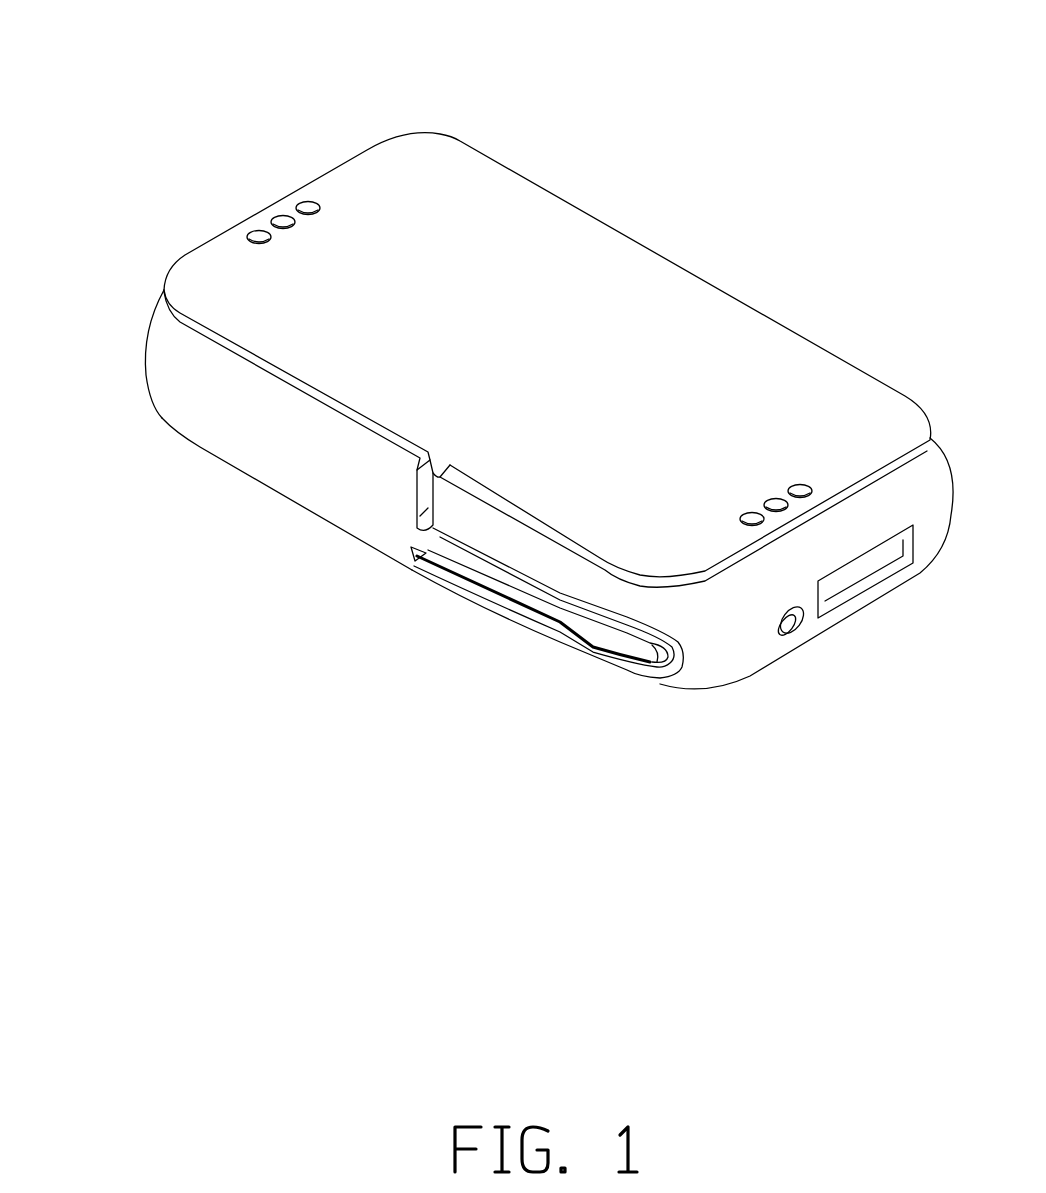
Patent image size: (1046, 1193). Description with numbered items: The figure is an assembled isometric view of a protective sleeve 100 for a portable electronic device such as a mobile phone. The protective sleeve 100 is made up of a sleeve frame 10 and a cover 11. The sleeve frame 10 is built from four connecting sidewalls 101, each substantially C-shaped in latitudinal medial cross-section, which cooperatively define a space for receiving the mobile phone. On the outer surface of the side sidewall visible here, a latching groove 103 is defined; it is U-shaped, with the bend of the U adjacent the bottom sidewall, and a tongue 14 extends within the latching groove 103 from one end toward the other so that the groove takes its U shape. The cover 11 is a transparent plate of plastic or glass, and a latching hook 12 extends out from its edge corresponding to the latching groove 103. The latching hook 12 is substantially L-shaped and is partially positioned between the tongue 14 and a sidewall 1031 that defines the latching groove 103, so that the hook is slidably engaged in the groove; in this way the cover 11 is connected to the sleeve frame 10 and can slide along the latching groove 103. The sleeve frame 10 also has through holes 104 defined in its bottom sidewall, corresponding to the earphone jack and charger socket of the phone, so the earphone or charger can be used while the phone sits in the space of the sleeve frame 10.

The protective sleeve 100 is at (298, 88).
The sleeve frame 10 is at (162, 358).
The cover 11 is at (762, 357).
The connecting sidewall 101 is at (318, 472).
The latching hook 12 is at (418, 528).
The tongue 14 is at (520, 600).
The latching groove 103 is at (673, 665).
The sidewall 1031 is at (586, 605).
The through hole 104 is at (852, 577).